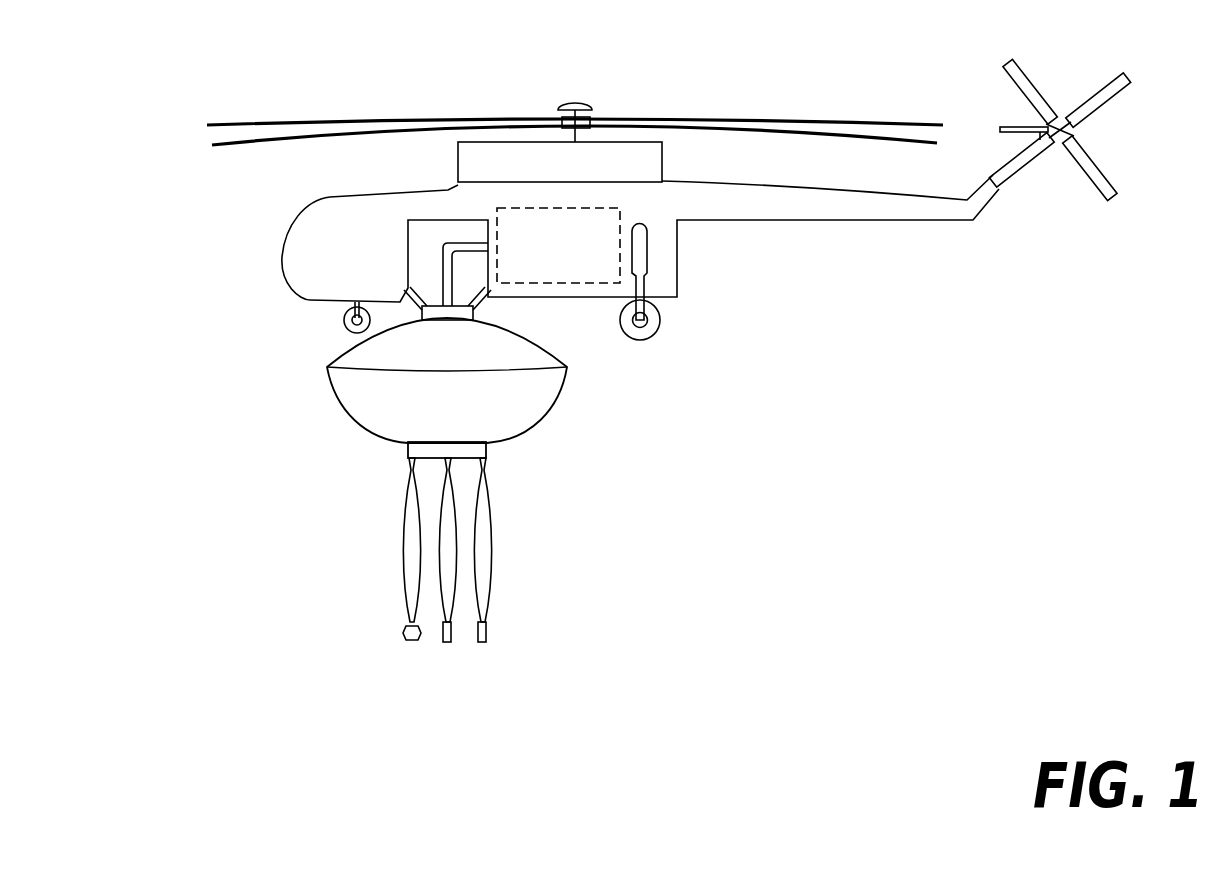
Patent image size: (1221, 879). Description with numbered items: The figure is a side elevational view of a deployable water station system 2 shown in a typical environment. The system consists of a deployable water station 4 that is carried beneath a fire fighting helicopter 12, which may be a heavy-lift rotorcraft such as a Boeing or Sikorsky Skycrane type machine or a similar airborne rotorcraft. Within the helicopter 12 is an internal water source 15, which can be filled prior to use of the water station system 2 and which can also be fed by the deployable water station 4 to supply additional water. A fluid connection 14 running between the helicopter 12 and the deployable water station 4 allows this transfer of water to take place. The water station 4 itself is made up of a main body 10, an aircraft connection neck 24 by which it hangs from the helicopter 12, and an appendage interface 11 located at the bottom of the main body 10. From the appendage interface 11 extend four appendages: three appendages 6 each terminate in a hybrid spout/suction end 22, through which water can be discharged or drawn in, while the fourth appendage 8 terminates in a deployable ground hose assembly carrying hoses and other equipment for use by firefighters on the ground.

The deployable water station system 2 is at (135, 82).
The deployable water station 4 is at (285, 375).
The appendages 6 is at (455, 520).
The fourth appendage 8 is at (403, 512).
The main body 10 is at (543, 402).
The appendage interface 11 is at (488, 450).
The fire fighting helicopter 12 is at (677, 255).
The fluid connection 14 is at (442, 267).
The internal water source 15 is at (604, 208).
The hybrid spout/suction end 22 is at (478, 641).
The aircraft connection neck 24 is at (474, 319).